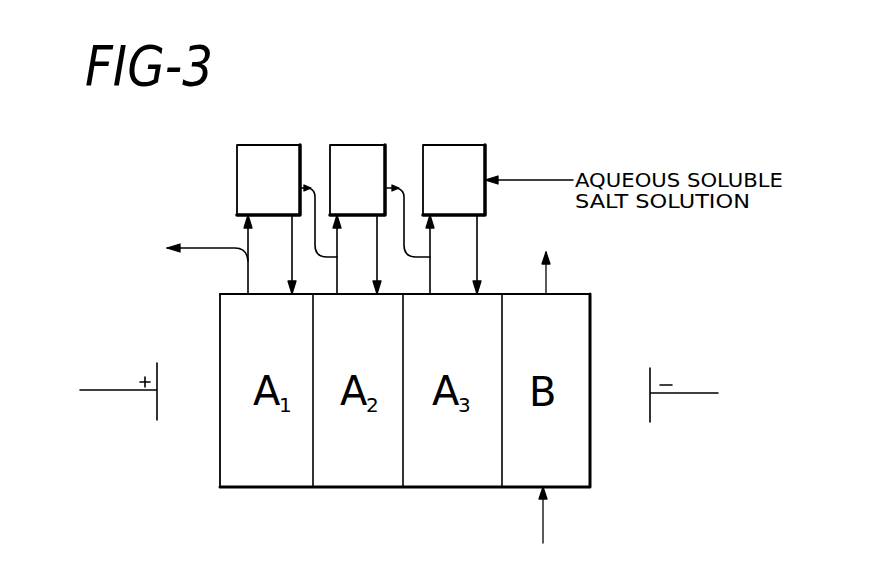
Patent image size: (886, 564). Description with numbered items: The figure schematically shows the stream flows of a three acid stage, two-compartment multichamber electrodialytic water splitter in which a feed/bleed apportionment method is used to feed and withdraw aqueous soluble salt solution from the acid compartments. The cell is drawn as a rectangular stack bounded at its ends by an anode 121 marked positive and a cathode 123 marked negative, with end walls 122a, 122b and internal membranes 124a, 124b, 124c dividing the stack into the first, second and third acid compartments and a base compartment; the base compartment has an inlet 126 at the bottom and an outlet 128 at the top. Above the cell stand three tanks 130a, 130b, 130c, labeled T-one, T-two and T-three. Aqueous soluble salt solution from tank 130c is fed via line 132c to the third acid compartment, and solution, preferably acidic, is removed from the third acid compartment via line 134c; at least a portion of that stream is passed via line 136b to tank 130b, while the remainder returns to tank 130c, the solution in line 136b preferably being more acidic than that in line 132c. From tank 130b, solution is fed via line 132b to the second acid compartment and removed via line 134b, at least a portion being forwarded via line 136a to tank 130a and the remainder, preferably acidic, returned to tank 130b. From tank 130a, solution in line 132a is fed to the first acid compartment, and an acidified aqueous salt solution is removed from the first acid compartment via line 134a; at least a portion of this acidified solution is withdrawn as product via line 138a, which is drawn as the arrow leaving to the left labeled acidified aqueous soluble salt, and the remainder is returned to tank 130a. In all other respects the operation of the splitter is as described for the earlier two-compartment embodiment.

The anode 121 is at (157, 407).
The cathode 123 is at (650, 410).
The first end wall of cell 122a is at (247, 438).
The second end wall of cell 122b is at (621, 448).
The first membrane 124a is at (343, 437).
The second membrane 124b is at (437, 436).
The third membrane 124c is at (522, 432).
The inlet to compartment B 126 is at (543, 512).
The outlet from compartment B 128 is at (549, 276).
The tank 130a is at (281, 117).
The tank 130b is at (388, 117).
The tank 130c is at (488, 117).
The line 132a is at (292, 262).
The line 132b is at (377, 263).
The line 132c is at (478, 276).
The line 134a is at (248, 272).
The line 134b is at (337, 268).
The line 134c is at (433, 272).
The line 136a is at (314, 196).
The line 136b is at (406, 194).
The line 138a is at (218, 218).